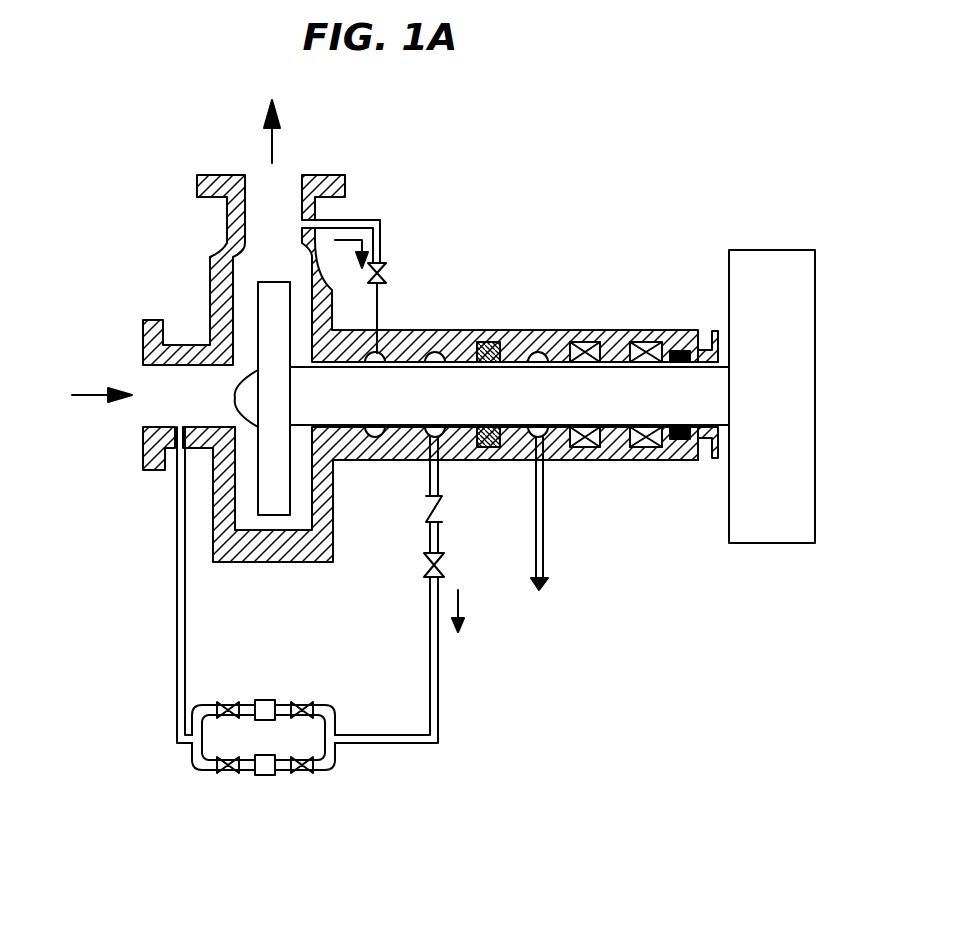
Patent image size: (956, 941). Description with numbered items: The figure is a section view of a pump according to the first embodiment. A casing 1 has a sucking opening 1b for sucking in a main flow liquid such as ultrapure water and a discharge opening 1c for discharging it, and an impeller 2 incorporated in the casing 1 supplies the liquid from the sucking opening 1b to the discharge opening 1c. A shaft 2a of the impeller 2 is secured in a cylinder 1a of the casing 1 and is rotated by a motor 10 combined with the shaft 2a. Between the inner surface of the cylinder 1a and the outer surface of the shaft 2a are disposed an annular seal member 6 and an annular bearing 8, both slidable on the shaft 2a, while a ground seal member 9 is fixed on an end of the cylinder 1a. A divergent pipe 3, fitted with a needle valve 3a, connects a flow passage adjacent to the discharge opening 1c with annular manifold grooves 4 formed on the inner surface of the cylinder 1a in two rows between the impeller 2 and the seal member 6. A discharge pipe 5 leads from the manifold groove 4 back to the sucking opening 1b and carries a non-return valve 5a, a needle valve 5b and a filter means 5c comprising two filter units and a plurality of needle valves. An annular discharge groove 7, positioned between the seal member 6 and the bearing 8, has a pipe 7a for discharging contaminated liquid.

The casing 1 is at (337, 173).
The cylinder 1a is at (690, 330).
The sucking opening 1b is at (140, 407).
The discharge opening 1c is at (286, 173).
The impeller 2 is at (277, 502).
The shaft 2a is at (515, 410).
The divergent pipe 3 is at (382, 218).
The needle valve 3a is at (388, 270).
The annular manifold groove 4 is at (422, 329).
The discharge pipe 5 is at (440, 710).
The non-return valve 5a is at (447, 512).
The needle valve 5b is at (421, 565).
The filter means 5c is at (275, 775).
The annular seal member 6 is at (492, 330).
The annular discharge groove 7 is at (541, 330).
The pipe 7a is at (546, 540).
The annular bearing 8 is at (616, 330).
The ground seal member 9 is at (715, 330).
The motor 10 is at (770, 249).